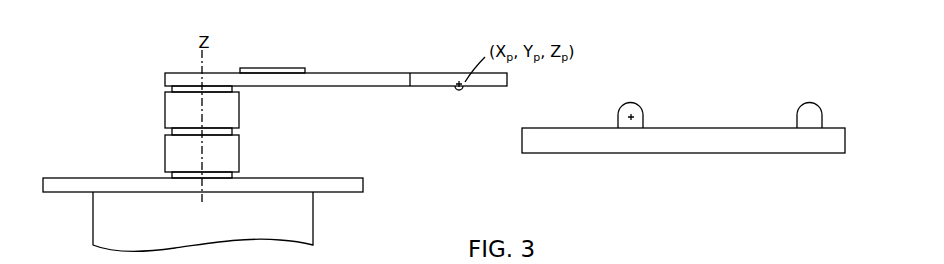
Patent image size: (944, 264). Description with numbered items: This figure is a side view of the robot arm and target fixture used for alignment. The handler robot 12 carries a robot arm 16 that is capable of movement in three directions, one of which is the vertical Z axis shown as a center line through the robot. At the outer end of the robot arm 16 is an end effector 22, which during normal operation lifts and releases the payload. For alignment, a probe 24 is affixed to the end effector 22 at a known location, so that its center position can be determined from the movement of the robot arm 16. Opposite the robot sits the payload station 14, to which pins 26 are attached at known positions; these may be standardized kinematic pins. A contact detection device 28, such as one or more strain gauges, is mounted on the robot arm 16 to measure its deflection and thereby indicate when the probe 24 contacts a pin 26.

The handler robot 12 is at (313, 224).
The payload station 14 is at (777, 157).
The robot arm 16 is at (162, 114).
The end effector 22 is at (443, 73).
The probe 24 is at (458, 92).
The pins 26 is at (643, 112).
The contact detection device 28 is at (277, 67).